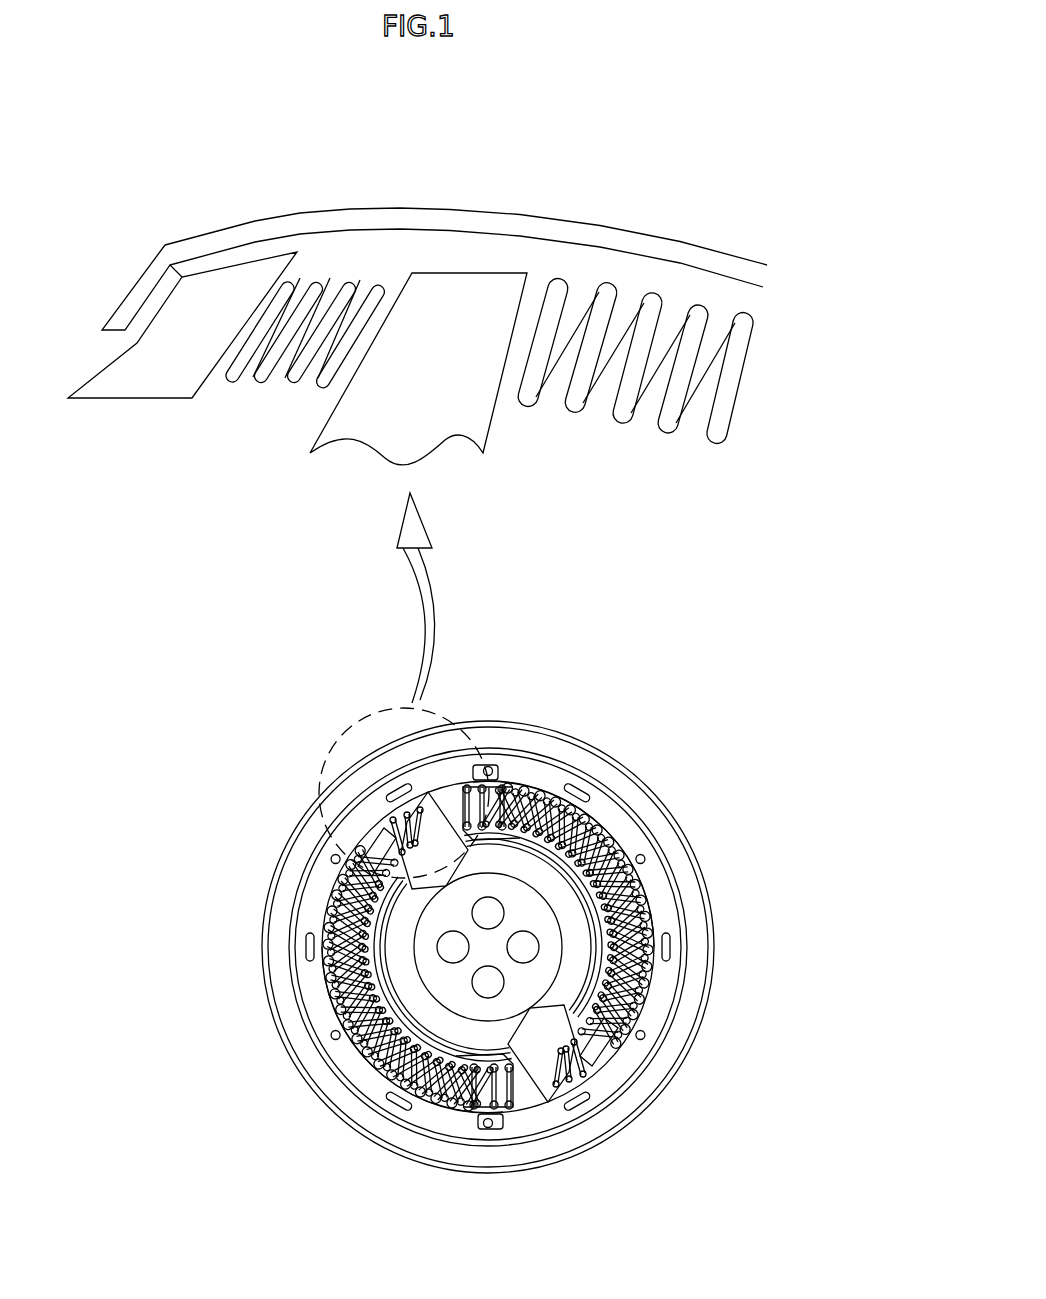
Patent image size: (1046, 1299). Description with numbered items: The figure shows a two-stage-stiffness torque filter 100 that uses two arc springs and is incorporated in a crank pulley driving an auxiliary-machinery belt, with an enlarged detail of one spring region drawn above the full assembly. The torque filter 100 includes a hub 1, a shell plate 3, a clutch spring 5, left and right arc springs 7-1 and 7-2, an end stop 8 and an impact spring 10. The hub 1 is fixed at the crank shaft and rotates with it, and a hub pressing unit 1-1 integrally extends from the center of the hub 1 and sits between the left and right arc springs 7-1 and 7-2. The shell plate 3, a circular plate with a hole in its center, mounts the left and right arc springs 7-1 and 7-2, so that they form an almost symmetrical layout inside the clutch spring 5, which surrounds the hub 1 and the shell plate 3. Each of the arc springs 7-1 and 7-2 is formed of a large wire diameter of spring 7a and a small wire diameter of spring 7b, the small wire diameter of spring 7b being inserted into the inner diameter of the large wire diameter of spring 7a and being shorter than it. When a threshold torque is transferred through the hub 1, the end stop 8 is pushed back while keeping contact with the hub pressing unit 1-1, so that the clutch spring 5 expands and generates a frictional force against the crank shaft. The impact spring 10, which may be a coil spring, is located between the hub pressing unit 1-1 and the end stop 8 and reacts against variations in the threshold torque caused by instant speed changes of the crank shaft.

The 2_stiff type torque filter 100 is at (676, 770).
The hub 1 is at (573, 958).
The hub pressing unit 1-1 is at (473, 273).
The shell plate 3 is at (688, 882).
The clutch spring 5 is at (340, 208).
The left arc spring 7-1 is at (555, 640).
The right arc spring 7-2 is at (158, 983).
The large wire diameter of spring 7a is at (653, 290).
The small wire diameter of spring 7b is at (527, 797).
The end stop 8 is at (222, 280).
The impact spring 10 is at (386, 281).